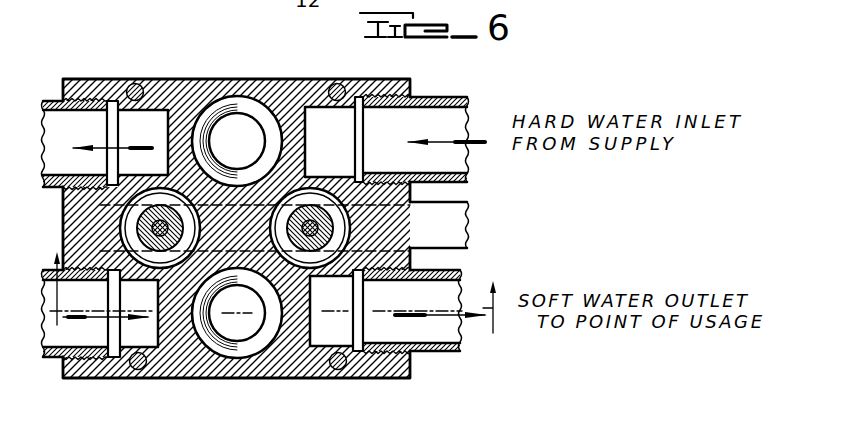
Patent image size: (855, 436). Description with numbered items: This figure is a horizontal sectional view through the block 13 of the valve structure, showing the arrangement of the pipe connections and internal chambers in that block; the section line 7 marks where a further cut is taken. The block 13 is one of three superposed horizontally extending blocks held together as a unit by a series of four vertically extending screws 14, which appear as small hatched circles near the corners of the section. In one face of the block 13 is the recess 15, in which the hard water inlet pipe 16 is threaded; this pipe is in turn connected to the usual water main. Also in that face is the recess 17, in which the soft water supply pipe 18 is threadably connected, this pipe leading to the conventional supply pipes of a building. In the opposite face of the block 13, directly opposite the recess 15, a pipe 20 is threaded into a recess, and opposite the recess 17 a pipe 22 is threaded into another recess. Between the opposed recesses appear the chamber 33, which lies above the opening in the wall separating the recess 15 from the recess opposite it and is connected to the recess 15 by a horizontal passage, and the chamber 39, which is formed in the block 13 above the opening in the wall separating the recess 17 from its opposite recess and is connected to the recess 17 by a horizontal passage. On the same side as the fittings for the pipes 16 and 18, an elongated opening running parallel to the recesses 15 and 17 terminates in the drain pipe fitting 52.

The section line 7- 7 is at (272, 281).
The block 13 is at (187, 370).
The screws 14 is at (135, 83).
The recess 15 is at (317, 119).
The hard water inlet pipe 16 is at (443, 97).
The recess 17 is at (320, 340).
The soft water supply pipe 18 is at (440, 337).
The pipe 20 is at (47, 100).
The pipe 22 is at (53, 358).
The chamber 33 is at (240, 112).
The chamber 39 is at (233, 344).
The drain pipe fitting 52 is at (453, 208).